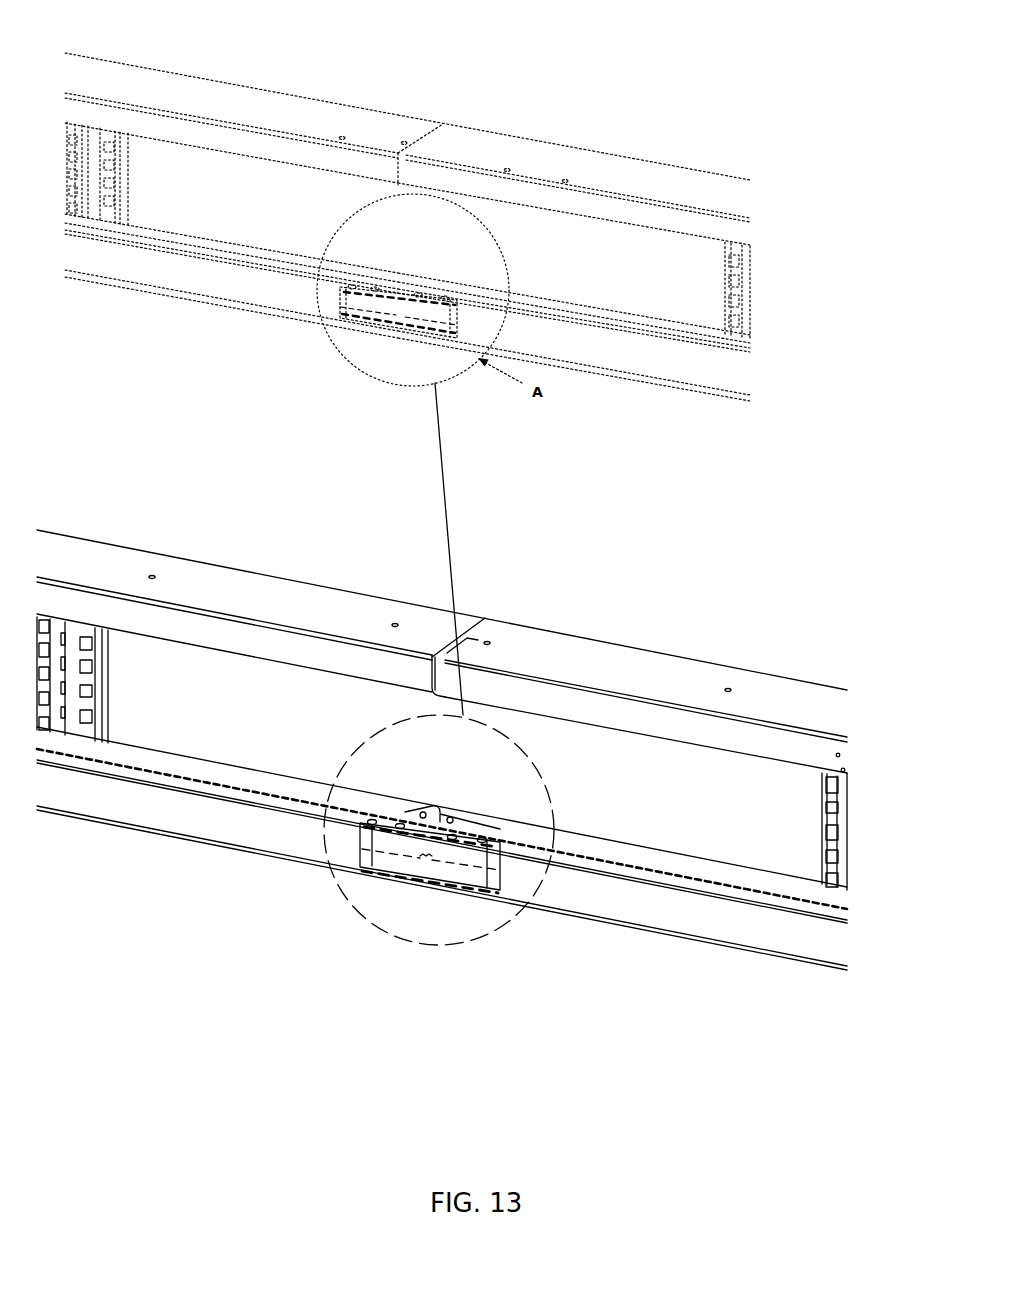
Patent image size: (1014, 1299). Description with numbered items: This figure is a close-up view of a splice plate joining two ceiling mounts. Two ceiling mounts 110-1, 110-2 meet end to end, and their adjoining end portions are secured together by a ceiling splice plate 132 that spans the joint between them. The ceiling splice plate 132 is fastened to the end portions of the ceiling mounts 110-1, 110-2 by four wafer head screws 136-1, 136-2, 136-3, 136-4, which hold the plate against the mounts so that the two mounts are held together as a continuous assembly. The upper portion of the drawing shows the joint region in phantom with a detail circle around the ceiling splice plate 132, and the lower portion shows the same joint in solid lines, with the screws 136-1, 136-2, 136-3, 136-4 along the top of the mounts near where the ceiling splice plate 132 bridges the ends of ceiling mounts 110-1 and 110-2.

The ceiling mount 110-1 is at (283, 80).
The ceiling mount 110-2 is at (652, 150).
The ceiling splice plate 132 is at (348, 238).
The wafer head screw 136-1 is at (342, 135).
The wafer head screw 136-2 is at (398, 150).
The wafer head screw 136-3 is at (507, 167).
The wafer head screw 136-4 is at (565, 178).